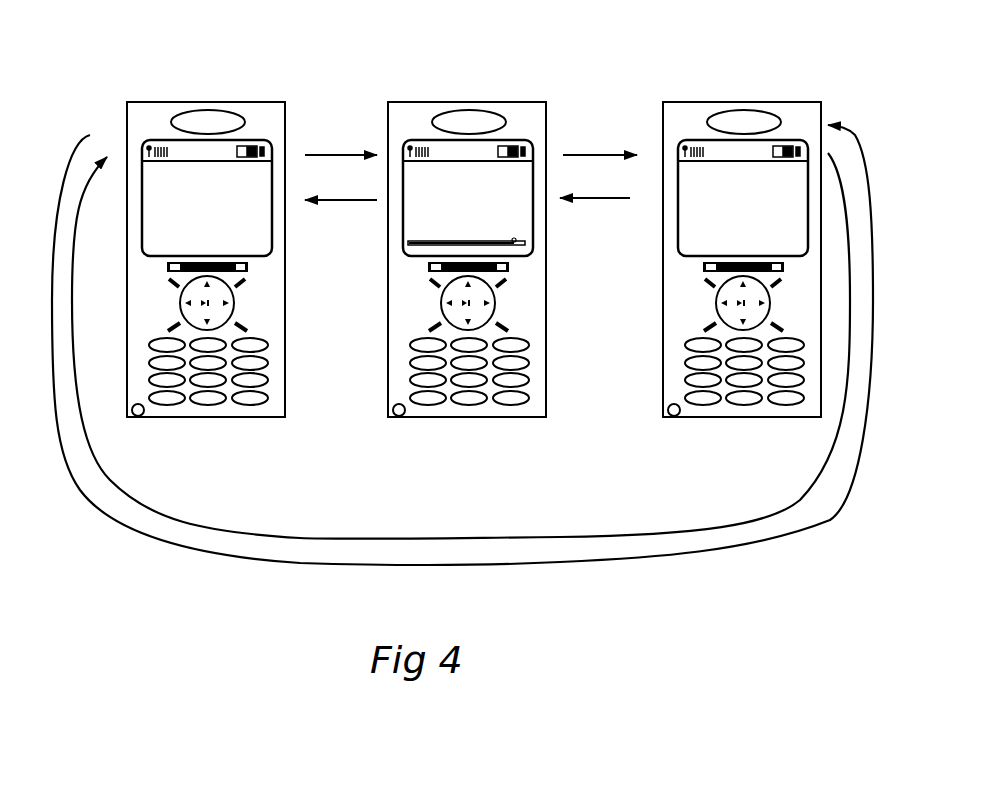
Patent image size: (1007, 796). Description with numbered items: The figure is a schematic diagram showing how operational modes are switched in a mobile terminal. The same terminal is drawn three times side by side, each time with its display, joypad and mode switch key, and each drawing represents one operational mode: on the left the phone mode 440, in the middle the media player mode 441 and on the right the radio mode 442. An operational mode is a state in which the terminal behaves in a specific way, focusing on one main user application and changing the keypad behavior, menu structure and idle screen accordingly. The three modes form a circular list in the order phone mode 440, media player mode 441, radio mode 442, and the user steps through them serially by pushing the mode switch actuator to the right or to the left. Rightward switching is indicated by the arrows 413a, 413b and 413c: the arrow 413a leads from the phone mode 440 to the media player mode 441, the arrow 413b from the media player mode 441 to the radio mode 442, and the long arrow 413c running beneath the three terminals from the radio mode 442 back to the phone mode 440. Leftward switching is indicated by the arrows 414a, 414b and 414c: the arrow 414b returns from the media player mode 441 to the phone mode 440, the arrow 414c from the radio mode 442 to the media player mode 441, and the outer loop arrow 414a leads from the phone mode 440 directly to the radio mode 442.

The arrow to the right 413a is at (340, 155).
The arrow to the right 413b is at (592, 155).
The arrow to the right 413c is at (405, 537).
The arrow to the left 414a is at (410, 562).
The arrow to the left 414b is at (345, 200).
The arrow to the left 414c is at (585, 198).
The phone mode 440 is at (213, 337).
The media player mode 441 is at (482, 324).
The radio mode 442 is at (747, 315).